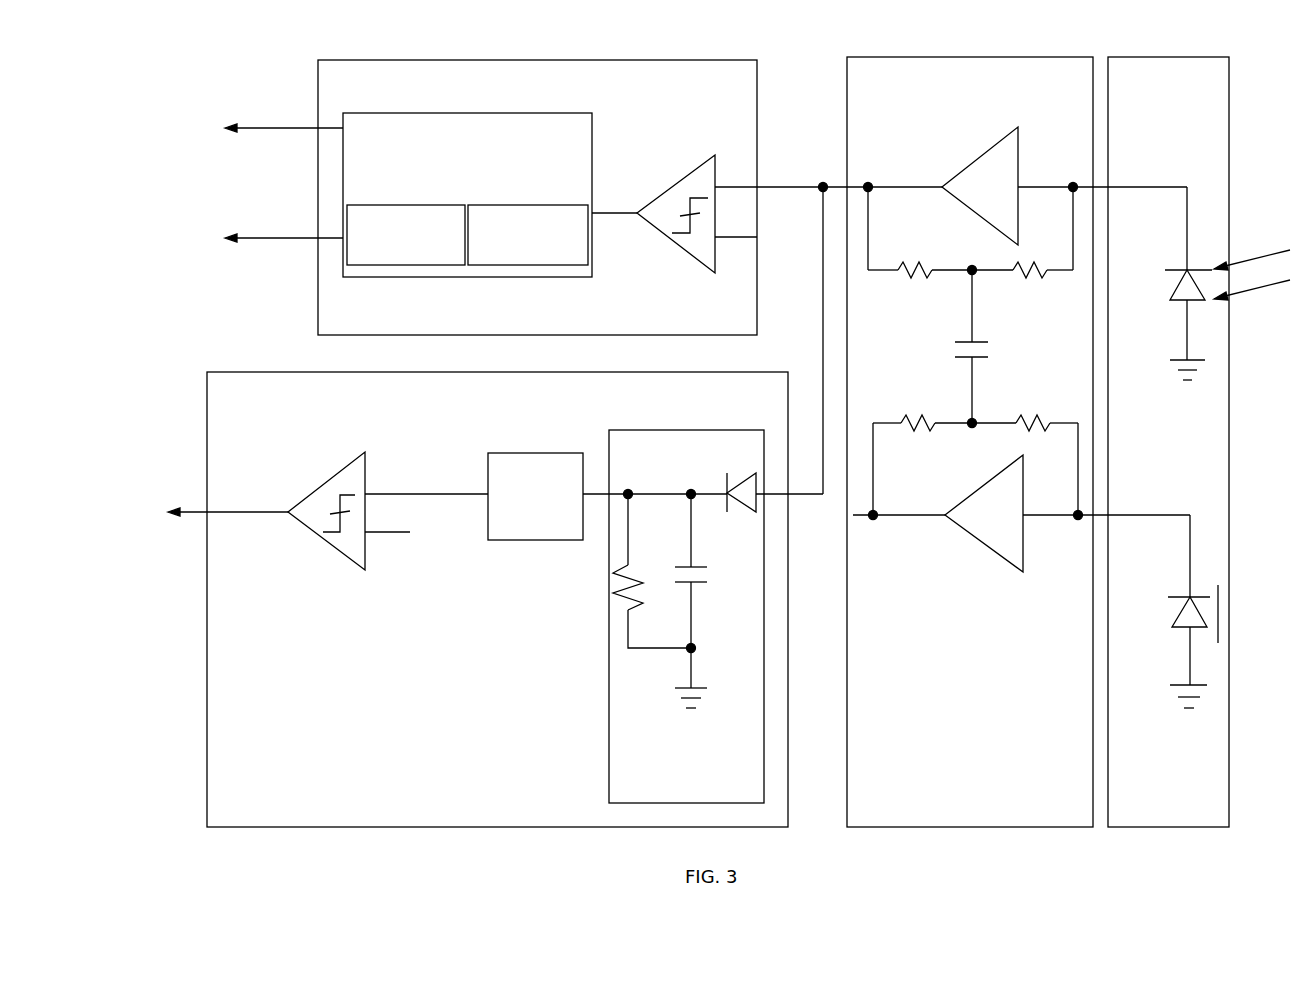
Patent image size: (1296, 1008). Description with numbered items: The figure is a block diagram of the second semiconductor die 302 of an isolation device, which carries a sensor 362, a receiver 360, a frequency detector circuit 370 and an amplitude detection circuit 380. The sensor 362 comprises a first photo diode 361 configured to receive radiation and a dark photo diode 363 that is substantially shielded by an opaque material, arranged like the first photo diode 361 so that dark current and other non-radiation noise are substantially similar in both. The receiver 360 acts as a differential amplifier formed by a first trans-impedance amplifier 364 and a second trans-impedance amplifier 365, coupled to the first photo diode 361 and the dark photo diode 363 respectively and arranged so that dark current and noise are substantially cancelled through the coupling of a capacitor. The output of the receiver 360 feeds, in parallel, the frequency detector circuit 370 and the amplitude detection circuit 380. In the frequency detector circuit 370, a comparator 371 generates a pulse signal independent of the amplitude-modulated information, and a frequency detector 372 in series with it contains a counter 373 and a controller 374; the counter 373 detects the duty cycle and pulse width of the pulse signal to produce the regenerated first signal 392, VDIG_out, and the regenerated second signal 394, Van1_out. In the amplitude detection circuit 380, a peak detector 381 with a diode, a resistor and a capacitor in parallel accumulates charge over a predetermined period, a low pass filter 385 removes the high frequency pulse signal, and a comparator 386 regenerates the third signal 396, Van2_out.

The second semiconductor die 302 is at (250, 79).
The frequency detector circuit 370 is at (517, 322).
The comparator 371 is at (678, 237).
The frequency detector 372 is at (562, 168).
The counter 373 is at (424, 256).
The controller 374 is at (544, 256).
The amplitude detection circuit 380 is at (459, 806).
The peak detector 381 is at (709, 797).
The low pass filter 385 is at (561, 519).
The comparator 386 is at (327, 537).
The regenerated first signal 392 is at (305, 131).
The regenerated second signal 394 is at (303, 353).
The regenerated third signal 396 is at (263, 605).
The receiver 360 is at (939, 121).
The first photo diode 361 is at (1178, 305).
The sensor 362 is at (1199, 442).
The dark photo diode 363 is at (1180, 630).
The first trans-impedance amplifier 364 is at (1016, 212).
The second trans-impedance amplifier 365 is at (1016, 539).